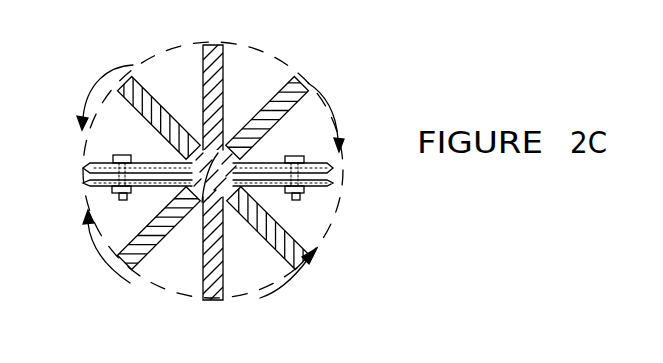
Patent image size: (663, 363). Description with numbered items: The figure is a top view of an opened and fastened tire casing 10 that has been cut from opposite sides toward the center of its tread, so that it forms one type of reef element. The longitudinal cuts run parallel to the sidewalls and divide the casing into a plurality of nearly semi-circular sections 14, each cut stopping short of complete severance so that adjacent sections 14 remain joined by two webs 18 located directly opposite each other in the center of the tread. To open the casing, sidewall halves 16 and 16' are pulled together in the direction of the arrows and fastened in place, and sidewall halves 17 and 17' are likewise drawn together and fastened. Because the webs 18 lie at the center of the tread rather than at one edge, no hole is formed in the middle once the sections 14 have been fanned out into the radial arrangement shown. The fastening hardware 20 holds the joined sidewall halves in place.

The tire casing 10 is at (256, 43).
The sections 14 is at (305, 82).
The sidewall half 16 is at (109, 149).
The sidewall half 16' is at (109, 194).
The sidewall half 17 is at (304, 150).
The sidewall half 17' is at (309, 193).
The web 18 is at (141, 252).
The clamp 20 is at (130, 195).